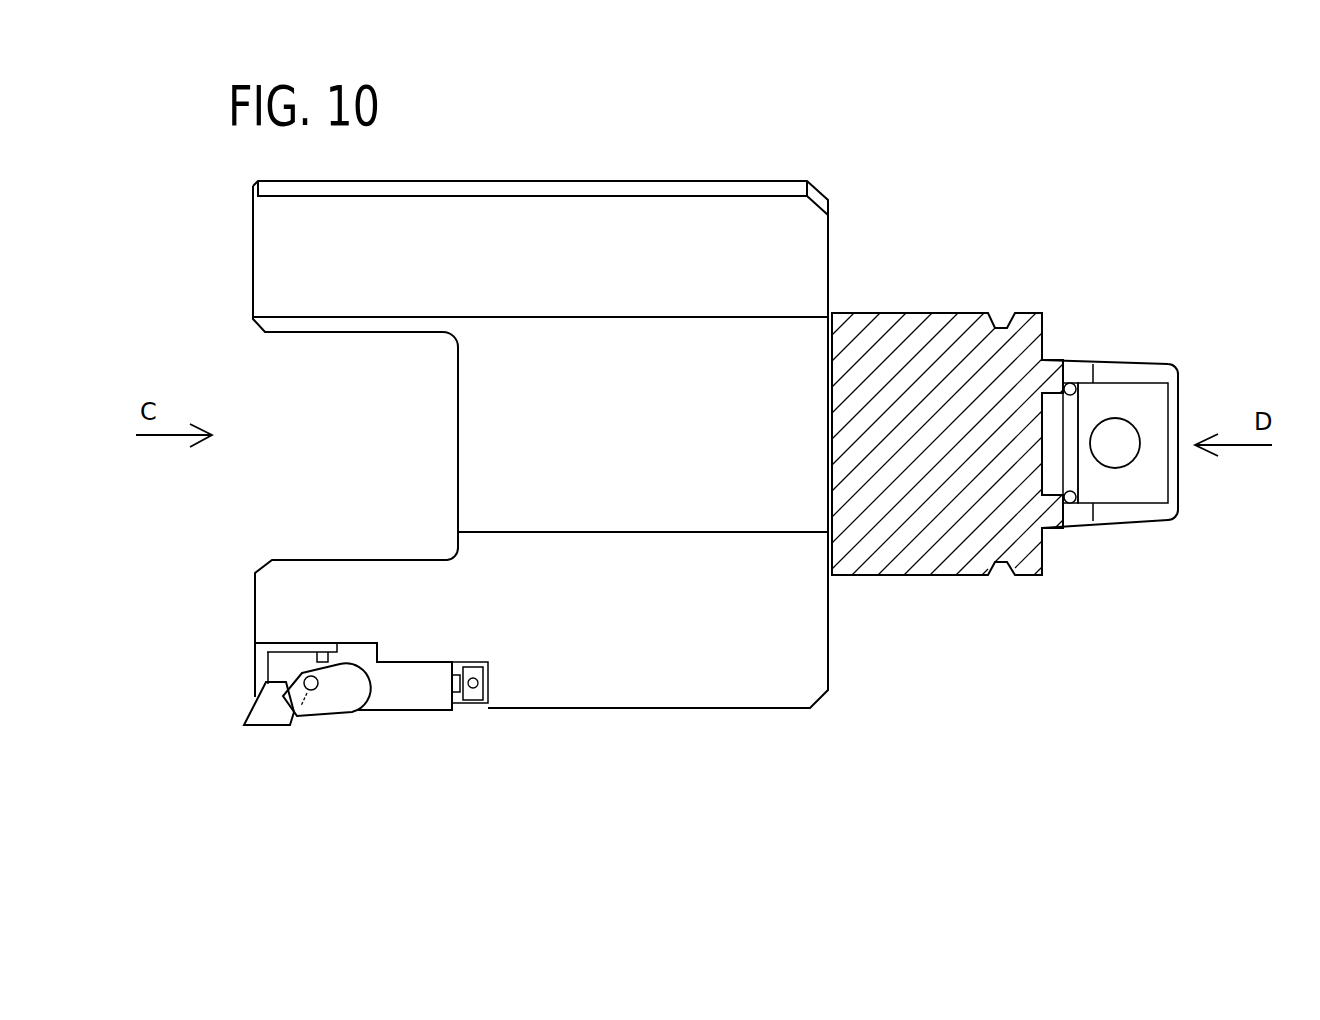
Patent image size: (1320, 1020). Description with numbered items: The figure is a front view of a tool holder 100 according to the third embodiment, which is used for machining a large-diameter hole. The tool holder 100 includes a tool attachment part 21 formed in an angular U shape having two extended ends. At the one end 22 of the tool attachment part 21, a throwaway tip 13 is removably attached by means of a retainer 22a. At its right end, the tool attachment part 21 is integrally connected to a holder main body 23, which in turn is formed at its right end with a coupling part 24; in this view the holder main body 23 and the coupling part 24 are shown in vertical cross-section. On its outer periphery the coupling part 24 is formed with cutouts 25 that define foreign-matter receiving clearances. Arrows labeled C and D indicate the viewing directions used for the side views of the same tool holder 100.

The tool holder 100 is at (816, 140).
The tool attachment part 21 is at (558, 218).
The one end 22 is at (310, 572).
The retainer 22a is at (348, 707).
The throwaway tip 13 is at (272, 718).
The holder main body 23 is at (936, 322).
The coupling part 24 is at (1072, 376).
The cutouts 25 is at (1125, 372).